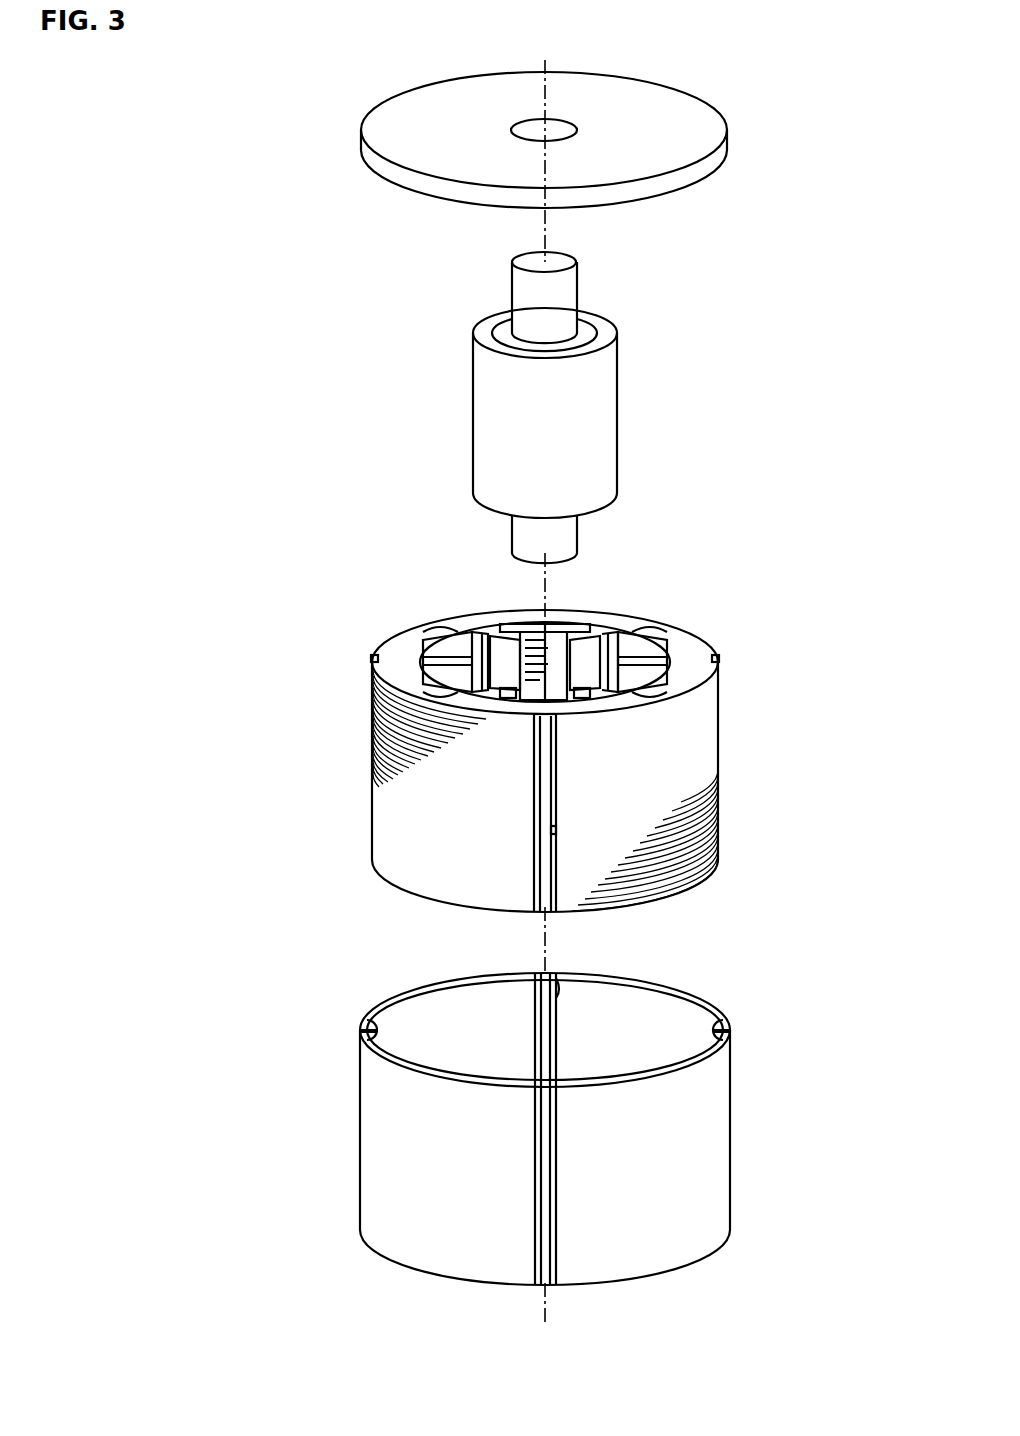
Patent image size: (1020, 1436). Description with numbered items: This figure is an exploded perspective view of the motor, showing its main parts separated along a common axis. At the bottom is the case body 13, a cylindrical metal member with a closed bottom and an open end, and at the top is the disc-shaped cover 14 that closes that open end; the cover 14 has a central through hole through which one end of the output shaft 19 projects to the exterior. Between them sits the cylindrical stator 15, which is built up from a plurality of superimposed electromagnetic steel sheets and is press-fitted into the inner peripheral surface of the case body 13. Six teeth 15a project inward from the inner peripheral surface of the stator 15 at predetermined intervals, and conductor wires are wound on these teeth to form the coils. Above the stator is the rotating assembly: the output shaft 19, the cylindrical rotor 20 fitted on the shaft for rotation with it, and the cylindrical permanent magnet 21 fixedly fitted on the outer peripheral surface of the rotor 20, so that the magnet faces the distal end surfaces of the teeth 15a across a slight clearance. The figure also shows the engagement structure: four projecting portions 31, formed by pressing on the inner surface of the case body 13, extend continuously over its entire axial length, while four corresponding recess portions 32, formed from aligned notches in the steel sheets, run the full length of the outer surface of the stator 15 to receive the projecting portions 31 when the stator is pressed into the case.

The case body 13 is at (715, 1140).
The cover 14 is at (700, 104).
The stator 15 is at (712, 743).
The teeth 15a is at (490, 625).
The output shaft 19 is at (572, 286).
The rotor 20 is at (596, 325).
The permanent magnet 21 is at (607, 385).
The projecting portions 31 is at (560, 985).
The recess portions 32 is at (540, 612).